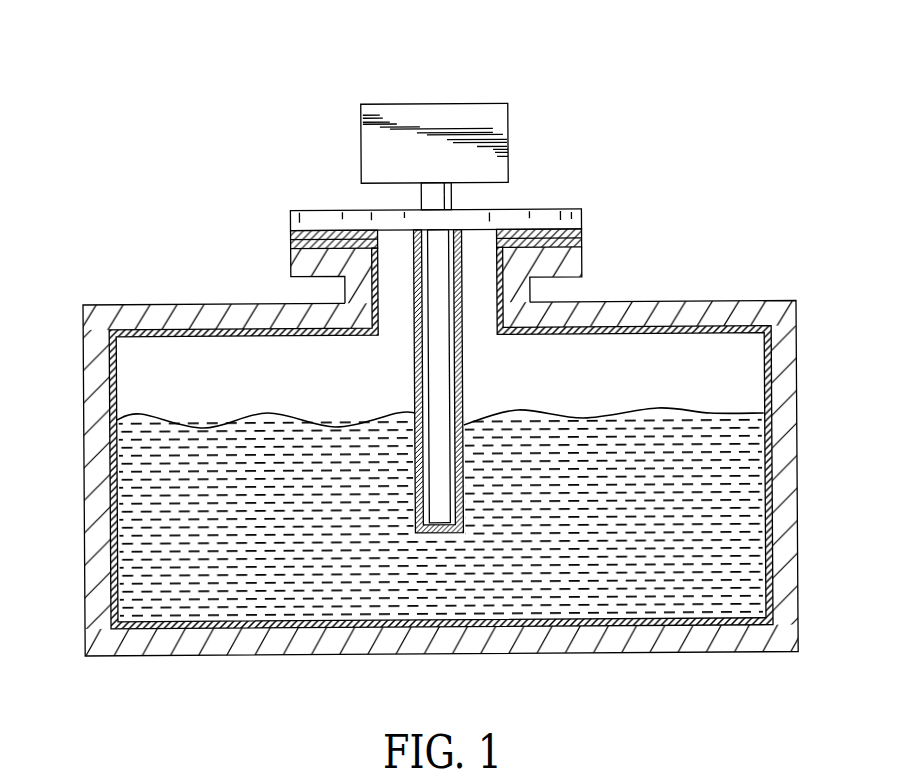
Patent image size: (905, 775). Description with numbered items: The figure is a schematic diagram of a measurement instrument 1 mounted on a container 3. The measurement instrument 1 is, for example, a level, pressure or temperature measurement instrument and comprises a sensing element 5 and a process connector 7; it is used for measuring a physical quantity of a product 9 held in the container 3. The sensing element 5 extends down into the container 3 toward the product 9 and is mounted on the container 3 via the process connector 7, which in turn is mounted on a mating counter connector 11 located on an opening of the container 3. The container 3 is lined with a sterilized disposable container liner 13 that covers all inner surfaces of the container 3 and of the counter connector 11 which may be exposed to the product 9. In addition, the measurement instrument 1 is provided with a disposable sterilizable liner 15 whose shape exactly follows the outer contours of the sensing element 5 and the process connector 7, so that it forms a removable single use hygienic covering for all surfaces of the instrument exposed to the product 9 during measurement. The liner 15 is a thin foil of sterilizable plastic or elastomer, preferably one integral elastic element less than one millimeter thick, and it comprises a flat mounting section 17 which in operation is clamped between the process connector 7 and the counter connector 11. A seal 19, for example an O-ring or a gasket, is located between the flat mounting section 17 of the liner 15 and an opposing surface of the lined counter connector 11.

The measurement instrument 1 is at (327, 148).
The container 3 is at (90, 457).
The sensing element 5 is at (438, 297).
The process connector 7 is at (292, 219).
The product 9 is at (294, 507).
The counter connector 11 is at (295, 267).
The container liner 13 is at (771, 473).
The liner 15 is at (462, 379).
The flat mounting section 17 is at (555, 212).
The seal 19 is at (291, 243).